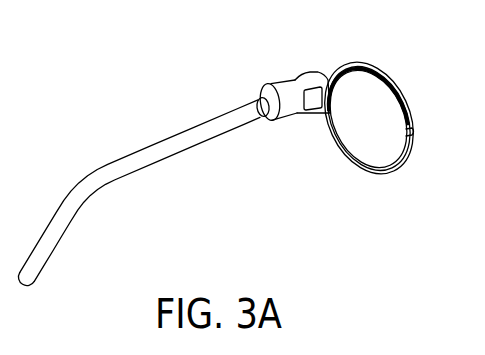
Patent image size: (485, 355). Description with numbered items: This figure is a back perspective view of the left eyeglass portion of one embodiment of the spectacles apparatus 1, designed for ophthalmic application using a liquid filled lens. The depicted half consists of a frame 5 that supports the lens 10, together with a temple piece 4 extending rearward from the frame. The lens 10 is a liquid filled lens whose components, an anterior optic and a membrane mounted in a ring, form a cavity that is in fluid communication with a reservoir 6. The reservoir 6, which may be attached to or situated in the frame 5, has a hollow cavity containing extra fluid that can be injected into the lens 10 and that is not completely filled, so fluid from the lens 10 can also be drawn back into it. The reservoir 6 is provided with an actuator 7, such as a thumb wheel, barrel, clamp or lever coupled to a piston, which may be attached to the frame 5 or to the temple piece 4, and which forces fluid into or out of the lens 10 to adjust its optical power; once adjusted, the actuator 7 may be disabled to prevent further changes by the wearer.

The spectacles apparatus 1 is at (202, 195).
The temple piece 4 is at (155, 145).
The frame 5 is at (398, 88).
The reservoir 6 is at (311, 75).
The actuator 7 is at (278, 91).
The lens 10 is at (350, 131).